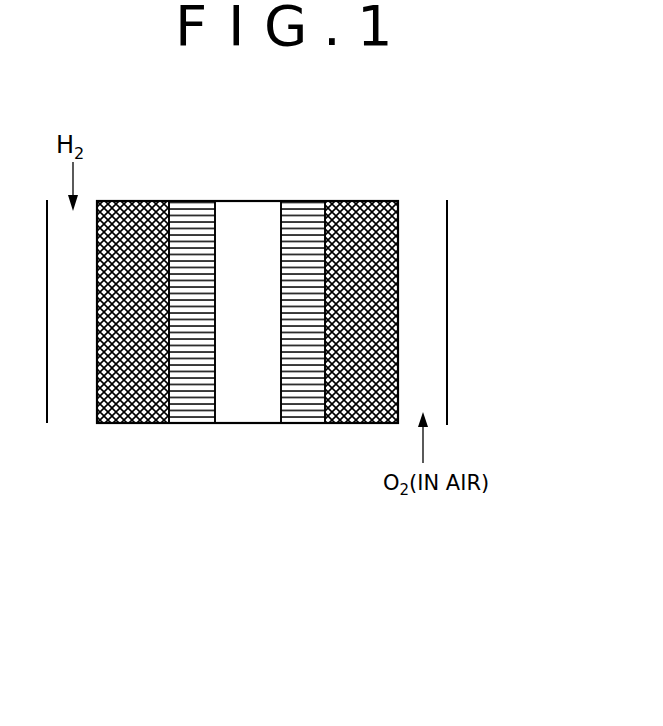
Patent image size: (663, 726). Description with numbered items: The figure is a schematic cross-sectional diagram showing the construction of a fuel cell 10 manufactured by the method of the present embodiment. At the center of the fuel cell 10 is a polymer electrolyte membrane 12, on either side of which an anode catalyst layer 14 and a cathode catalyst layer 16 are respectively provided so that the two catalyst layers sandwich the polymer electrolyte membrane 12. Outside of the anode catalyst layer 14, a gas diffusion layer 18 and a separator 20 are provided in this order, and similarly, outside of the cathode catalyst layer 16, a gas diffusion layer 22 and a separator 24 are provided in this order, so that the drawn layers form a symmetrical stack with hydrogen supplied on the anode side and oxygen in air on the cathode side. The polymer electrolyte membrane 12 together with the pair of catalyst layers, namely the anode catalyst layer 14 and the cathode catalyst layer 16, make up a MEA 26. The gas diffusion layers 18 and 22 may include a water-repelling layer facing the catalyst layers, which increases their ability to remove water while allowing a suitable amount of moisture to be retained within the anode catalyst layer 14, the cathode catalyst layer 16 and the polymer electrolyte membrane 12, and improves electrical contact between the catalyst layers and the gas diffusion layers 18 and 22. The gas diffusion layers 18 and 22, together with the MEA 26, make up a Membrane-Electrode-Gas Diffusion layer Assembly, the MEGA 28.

The fuel cell 10 is at (309, 353).
The polymer electrolyte membrane 12 is at (248, 423).
The anode catalyst layer 14 is at (192, 423).
The cathode catalyst layer 16 is at (304, 368).
The gas diffusion layer 18 is at (132, 423).
The separator 20 is at (72, 423).
The gas diffusion layer 22 is at (360, 423).
The separator 24 is at (438, 415).
The MEA 26 is at (249, 391).
The MEGA 28 is at (250, 414).